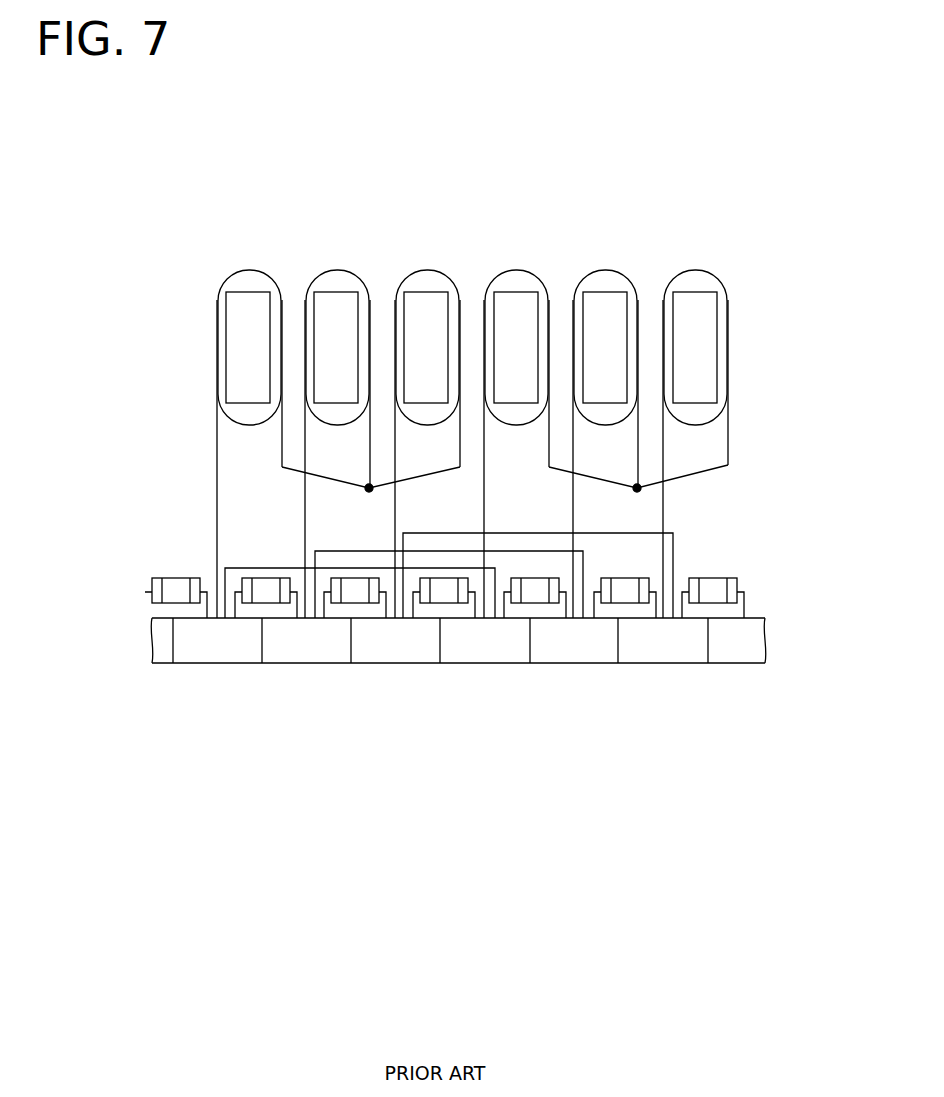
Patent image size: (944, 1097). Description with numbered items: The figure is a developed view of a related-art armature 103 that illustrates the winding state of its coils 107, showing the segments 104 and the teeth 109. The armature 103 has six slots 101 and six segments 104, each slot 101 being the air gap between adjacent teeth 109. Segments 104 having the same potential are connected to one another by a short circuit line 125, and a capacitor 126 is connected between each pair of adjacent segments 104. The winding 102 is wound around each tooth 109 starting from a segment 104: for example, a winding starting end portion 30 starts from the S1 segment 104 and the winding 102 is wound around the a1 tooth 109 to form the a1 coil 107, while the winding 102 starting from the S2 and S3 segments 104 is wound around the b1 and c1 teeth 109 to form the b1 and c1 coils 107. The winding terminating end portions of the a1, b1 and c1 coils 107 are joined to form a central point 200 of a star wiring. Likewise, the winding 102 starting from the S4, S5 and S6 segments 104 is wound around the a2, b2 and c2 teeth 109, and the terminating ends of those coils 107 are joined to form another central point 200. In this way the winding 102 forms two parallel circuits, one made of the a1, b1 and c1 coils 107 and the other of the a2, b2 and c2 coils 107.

The armature 103 is at (754, 231).
The slot 101 is at (382, 274).
The winding 102 is at (217, 447).
The coil 107 is at (235, 272).
The tooth 109 is at (333, 292).
The central point of star wiring 200 is at (365, 486).
The winding starting end portion 30 is at (217, 547).
The short circuit line 125 is at (675, 545).
The capacitor 126 is at (178, 578).
The segment 104 is at (242, 650).